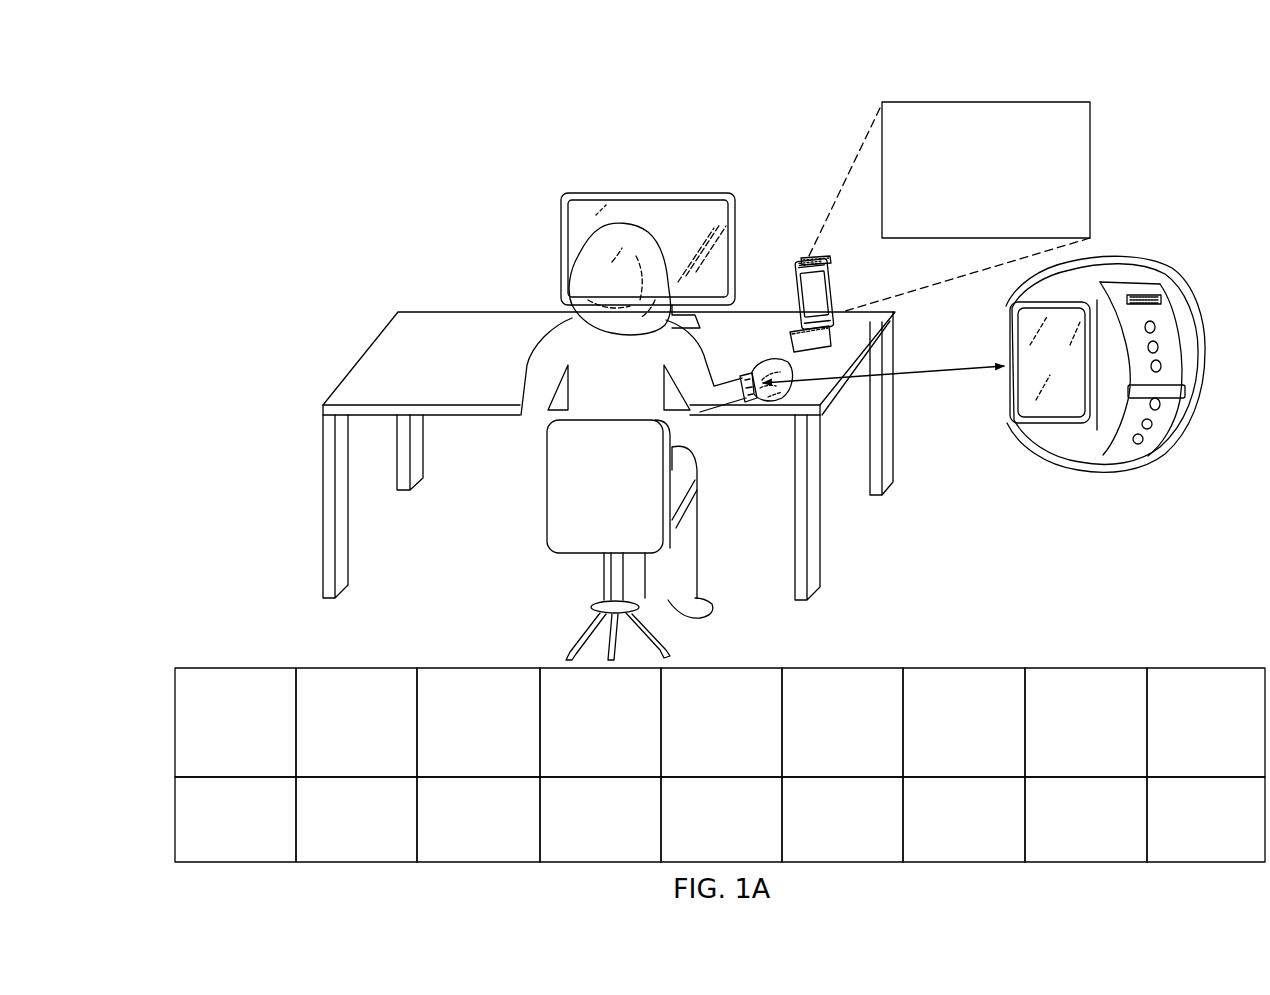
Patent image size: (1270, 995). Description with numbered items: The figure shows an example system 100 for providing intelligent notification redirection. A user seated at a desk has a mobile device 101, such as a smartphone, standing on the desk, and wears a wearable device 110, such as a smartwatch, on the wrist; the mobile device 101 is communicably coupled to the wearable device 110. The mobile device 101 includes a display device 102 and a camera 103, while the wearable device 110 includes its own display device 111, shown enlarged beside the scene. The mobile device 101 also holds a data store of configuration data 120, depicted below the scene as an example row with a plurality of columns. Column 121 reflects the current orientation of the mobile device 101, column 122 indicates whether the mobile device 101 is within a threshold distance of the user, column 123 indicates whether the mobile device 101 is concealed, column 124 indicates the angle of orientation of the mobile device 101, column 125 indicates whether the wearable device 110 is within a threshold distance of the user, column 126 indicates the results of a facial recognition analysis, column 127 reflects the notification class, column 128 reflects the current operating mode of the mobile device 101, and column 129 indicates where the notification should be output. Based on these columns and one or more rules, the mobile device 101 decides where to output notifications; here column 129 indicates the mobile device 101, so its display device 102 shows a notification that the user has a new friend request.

The system 100 is at (400, 130).
The mobile device 101 is at (795, 302).
The display device 102 is at (832, 296).
The camera 103 is at (801, 266).
The wearable device 110 is at (792, 410).
The display device 111 is at (1052, 405).
The configuration data 120 is at (197, 652).
The column 121 is at (200, 758).
The column 122 is at (313, 683).
The column 123 is at (458, 684).
The column 124 is at (556, 690).
The column 125 is at (771, 683).
The column 126 is at (880, 684).
The column 127 is at (997, 686).
The column 128 is at (1079, 686).
The column 129 is at (1224, 686).